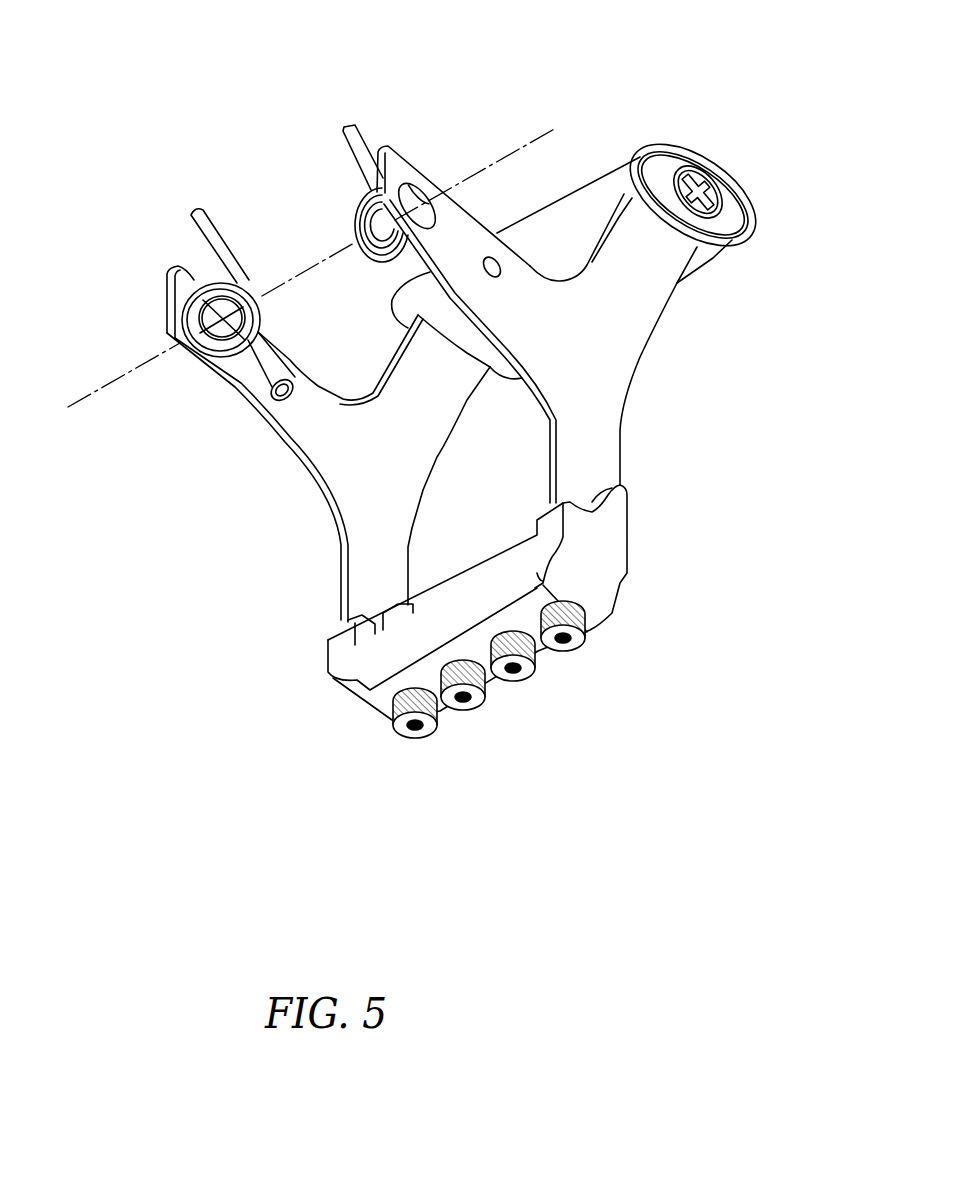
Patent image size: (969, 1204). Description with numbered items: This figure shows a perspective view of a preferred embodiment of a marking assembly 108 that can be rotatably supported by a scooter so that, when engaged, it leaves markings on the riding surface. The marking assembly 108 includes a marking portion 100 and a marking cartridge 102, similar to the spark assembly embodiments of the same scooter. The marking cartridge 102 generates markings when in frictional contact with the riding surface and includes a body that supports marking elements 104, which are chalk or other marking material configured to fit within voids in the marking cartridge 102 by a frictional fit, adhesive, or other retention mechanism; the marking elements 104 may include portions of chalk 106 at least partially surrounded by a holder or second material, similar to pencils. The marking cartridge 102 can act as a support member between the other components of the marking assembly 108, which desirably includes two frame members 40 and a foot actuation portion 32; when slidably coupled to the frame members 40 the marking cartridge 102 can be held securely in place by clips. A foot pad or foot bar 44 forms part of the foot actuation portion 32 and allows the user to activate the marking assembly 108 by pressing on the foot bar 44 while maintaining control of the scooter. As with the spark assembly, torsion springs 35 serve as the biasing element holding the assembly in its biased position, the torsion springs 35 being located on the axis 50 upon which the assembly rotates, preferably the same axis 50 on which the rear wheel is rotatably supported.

The foot actuation portion 32 is at (733, 189).
The torsion springs 35 is at (345, 141).
The frame members 40 is at (250, 233).
The foot bar 44 is at (580, 200).
The axis 50 is at (487, 163).
The marking portion 100 is at (539, 724).
The marking cartridge 102 is at (543, 656).
The marking elements 104 is at (483, 706).
The portions of chalk 106 is at (418, 735).
The marking assembly 108 is at (425, 395).